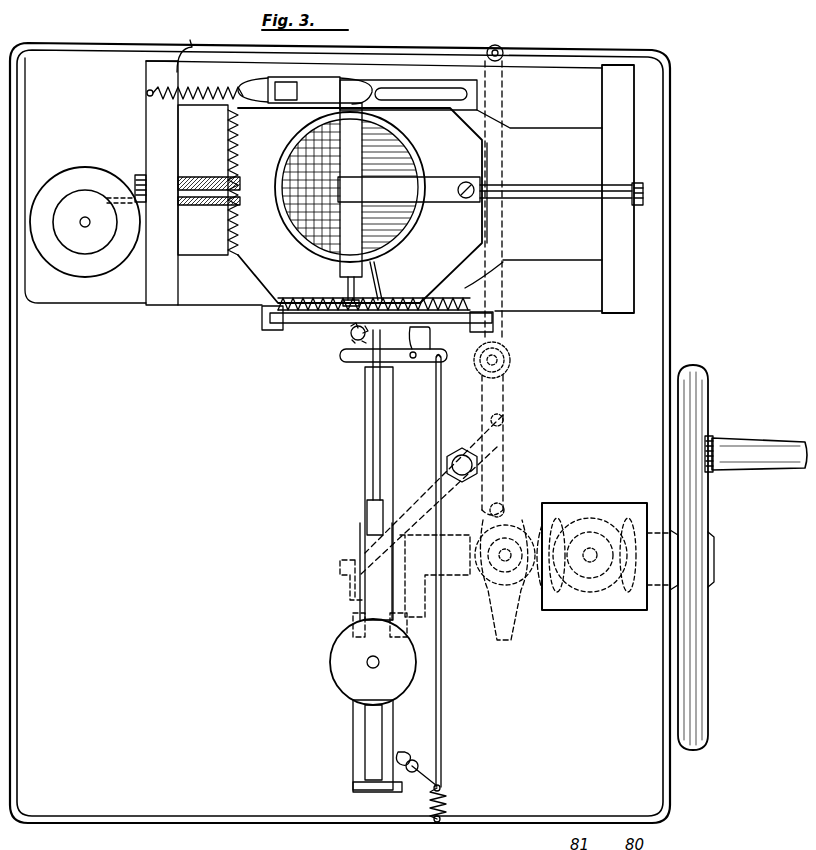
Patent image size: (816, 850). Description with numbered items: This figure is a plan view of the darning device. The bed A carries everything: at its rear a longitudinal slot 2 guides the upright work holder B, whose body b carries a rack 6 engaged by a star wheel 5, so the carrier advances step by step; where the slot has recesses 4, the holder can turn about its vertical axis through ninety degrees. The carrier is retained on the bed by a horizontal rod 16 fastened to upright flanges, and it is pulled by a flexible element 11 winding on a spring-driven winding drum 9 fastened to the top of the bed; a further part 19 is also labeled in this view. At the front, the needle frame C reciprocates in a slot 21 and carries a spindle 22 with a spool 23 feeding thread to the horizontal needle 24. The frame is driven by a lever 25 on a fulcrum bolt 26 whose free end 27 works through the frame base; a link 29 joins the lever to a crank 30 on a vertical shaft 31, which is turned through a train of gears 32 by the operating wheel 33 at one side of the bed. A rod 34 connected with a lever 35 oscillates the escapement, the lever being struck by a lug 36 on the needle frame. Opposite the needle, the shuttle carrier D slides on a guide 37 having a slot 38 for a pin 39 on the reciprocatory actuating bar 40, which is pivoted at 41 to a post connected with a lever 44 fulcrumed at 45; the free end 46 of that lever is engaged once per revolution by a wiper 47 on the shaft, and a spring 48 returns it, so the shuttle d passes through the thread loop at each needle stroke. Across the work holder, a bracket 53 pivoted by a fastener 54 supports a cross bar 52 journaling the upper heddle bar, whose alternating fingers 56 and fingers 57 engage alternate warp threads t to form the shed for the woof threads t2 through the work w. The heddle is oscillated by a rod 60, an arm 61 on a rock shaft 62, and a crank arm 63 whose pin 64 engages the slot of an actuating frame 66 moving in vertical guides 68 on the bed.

The bed A is at (344, 433).
The longitudinal slot 2 is at (600, 251).
The recesses 4 is at (478, 283).
The star wheel 5 is at (346, 350).
The rack 6 is at (427, 341).
The winding drum 9 is at (85, 222).
The flexible element 11 is at (121, 197).
The horizontal rod 16 is at (528, 187).
The drum rim 19 is at (283, 160).
The slot 21 is at (365, 486).
The spindle 22 is at (370, 666).
The spool 23 is at (331, 660).
The needle 24 is at (376, 401).
The lever 25 is at (423, 496).
The fulcrum bolt 26 is at (462, 455).
The free end 27 is at (355, 563).
The link 29 is at (514, 478).
The crank 30 is at (490, 536).
The vertical shaft 31 is at (490, 585).
The train of gears 32 is at (554, 612).
The operating wheel 33 is at (703, 682).
The rod 34 is at (442, 677).
The lever 35 is at (394, 790).
The lug 36 is at (440, 778).
The guide 37 is at (403, 80).
The slot 38 is at (432, 100).
The pin 39 is at (326, 79).
The actuating bar 40 is at (188, 45).
The pivot connection 41 is at (504, 51).
The lever 44 is at (503, 246).
The fulcrum 45 is at (512, 360).
The free end 46 is at (500, 498).
The wiper 47 is at (495, 626).
The spring 48 is at (214, 97).
The cross bar 52 is at (351, 190).
The bracket 53 is at (449, 201).
The pivot fastener 54 is at (466, 182).
The fingers 56 is at (352, 221).
The fingers 57 is at (353, 244).
The rod 60 is at (422, 174).
The arm 61 is at (421, 160).
The rock shaft 62 is at (346, 283).
The crank arm 63 is at (380, 300).
The pin 64 is at (354, 327).
The actuating frame 66 is at (306, 318).
The vertical guides 68 is at (264, 326).
The work holder B is at (402, 277).
The needle frame C is at (351, 730).
The shuttle carrier D is at (340, 78).
The body b is at (251, 265).
The shuttle d is at (306, 98).
The warp thread t is at (394, 210).
The woof threads t2 is at (282, 200).
The work w is at (290, 230).